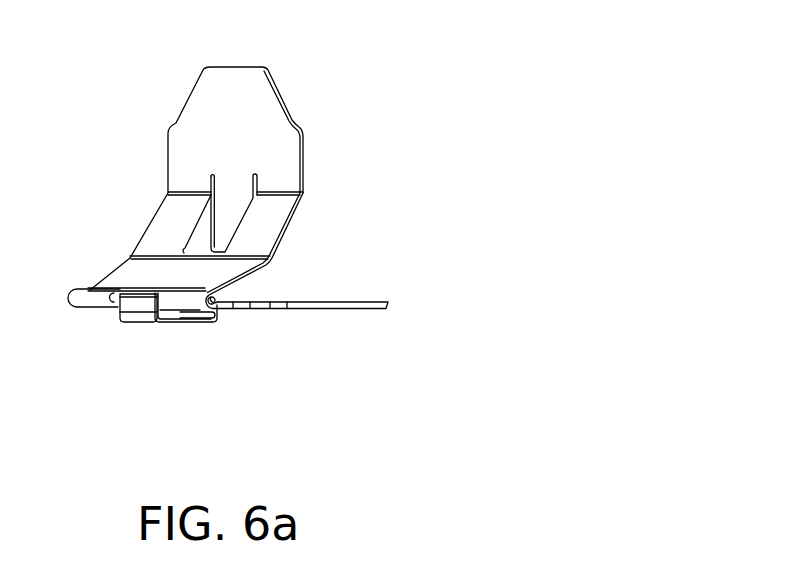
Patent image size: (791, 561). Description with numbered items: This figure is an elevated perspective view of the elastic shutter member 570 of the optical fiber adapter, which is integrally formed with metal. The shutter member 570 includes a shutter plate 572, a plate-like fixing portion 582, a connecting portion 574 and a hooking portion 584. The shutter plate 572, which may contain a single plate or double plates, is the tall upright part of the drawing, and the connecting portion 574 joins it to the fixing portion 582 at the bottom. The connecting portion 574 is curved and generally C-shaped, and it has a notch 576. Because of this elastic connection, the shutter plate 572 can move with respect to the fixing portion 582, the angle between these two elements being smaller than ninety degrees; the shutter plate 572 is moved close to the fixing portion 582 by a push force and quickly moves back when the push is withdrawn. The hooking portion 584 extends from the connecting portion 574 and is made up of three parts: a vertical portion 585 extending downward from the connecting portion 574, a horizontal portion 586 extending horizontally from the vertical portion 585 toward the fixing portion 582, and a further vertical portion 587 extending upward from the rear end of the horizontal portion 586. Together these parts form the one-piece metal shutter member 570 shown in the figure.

The shutter member 570 is at (377, 130).
The shutter plate 572 is at (200, 133).
The connecting portion 574 is at (185, 303).
The notch 576 is at (218, 302).
The fixing portion 582 is at (367, 302).
The hooking portion 584 is at (137, 322).
The vertical portion 585 is at (128, 307).
The horizontal portion 586 is at (173, 322).
The vertical portion 587 is at (210, 320).